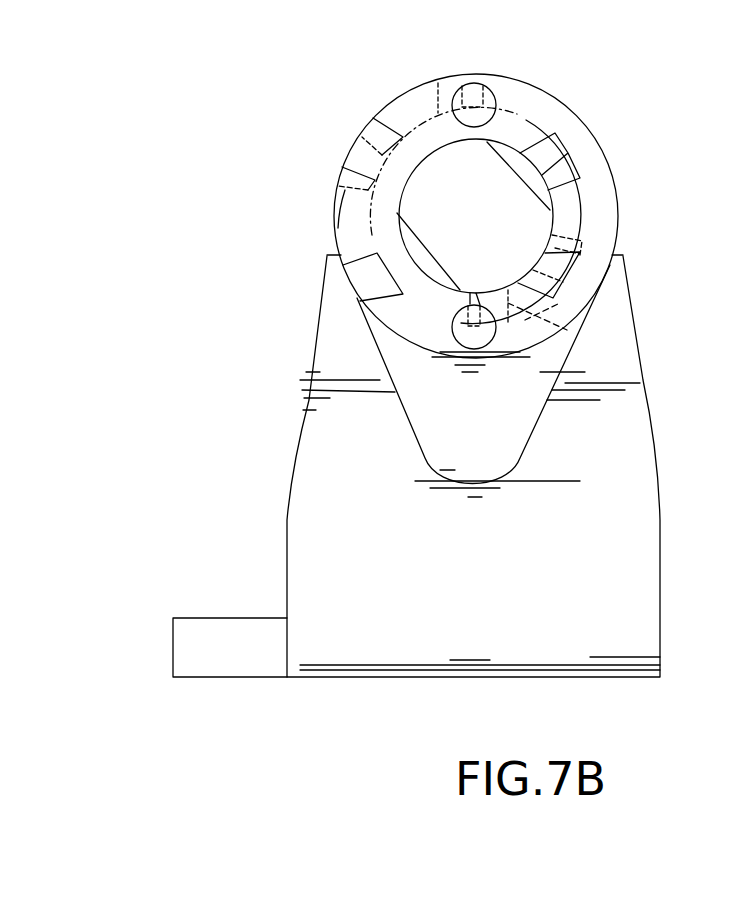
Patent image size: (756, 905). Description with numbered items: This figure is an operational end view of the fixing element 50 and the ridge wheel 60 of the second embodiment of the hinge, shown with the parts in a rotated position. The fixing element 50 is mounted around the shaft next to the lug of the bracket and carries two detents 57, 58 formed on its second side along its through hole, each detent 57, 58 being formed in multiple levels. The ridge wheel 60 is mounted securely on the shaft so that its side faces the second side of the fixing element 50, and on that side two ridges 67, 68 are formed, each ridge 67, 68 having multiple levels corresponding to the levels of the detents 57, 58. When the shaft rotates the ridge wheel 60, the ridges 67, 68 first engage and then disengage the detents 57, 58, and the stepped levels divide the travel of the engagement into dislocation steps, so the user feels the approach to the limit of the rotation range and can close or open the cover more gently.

The fixing element 50 is at (555, 440).
The detent 57 is at (347, 228).
The detent 58 is at (572, 203).
The ridge wheel 60 is at (633, 182).
The ridge 67 is at (407, 105).
The ridge 68 is at (497, 326).